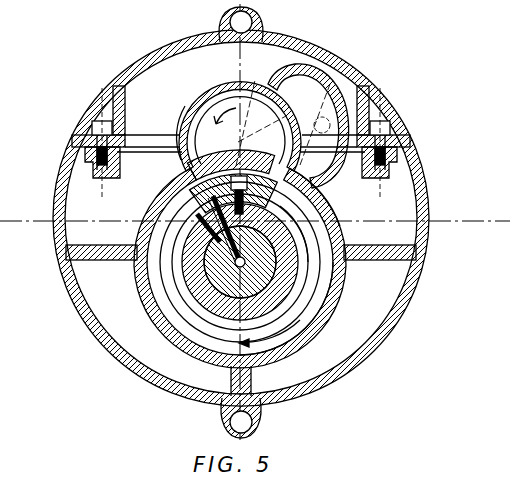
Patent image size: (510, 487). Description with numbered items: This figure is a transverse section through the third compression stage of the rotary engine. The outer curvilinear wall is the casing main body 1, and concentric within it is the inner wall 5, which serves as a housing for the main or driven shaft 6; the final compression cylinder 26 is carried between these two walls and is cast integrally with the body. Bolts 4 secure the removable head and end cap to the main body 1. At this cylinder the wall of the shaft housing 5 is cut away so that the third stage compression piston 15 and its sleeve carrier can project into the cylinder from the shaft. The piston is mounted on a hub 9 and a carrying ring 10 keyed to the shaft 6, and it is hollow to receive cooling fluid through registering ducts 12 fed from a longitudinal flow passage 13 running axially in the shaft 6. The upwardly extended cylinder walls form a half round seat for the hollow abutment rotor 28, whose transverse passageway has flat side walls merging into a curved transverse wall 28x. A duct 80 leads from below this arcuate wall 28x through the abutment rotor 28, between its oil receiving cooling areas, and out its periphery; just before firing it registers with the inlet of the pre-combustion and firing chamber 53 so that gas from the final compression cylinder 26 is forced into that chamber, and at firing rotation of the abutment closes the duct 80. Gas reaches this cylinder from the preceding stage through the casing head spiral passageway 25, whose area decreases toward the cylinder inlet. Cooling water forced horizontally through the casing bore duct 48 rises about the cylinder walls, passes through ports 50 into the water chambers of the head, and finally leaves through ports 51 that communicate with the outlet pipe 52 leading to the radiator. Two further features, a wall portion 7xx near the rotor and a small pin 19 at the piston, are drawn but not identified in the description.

The main body 1 is at (416, 277).
The bolts 4 is at (248, 345).
The inner wall 5 is at (316, 292).
The main or driven shaft 6 is at (200, 332).
The partition wall 7xx is at (336, 212).
The hubs 9 is at (286, 250).
The carrying rings 10 is at (291, 223).
The registering ducts 12 is at (250, 203).
The longitudinal flow passage 13 is at (186, 222).
The third stage compression piston 15 is at (204, 212).
The vane pin 19 is at (230, 221).
The spiral passageway 25 is at (315, 128).
The final compression cylinder 26 is at (262, 344).
The abutment rotor 28 is at (268, 84).
The curved transverse wall 28x is at (195, 122).
The casing bore duct 48 is at (256, 423).
The ports 50 is at (153, 153).
The ports 51 is at (238, 46).
The outlet pipe 52 is at (262, 17).
The pre-combustion and firing chamber 53 is at (338, 88).
The duct 80 is at (248, 140).